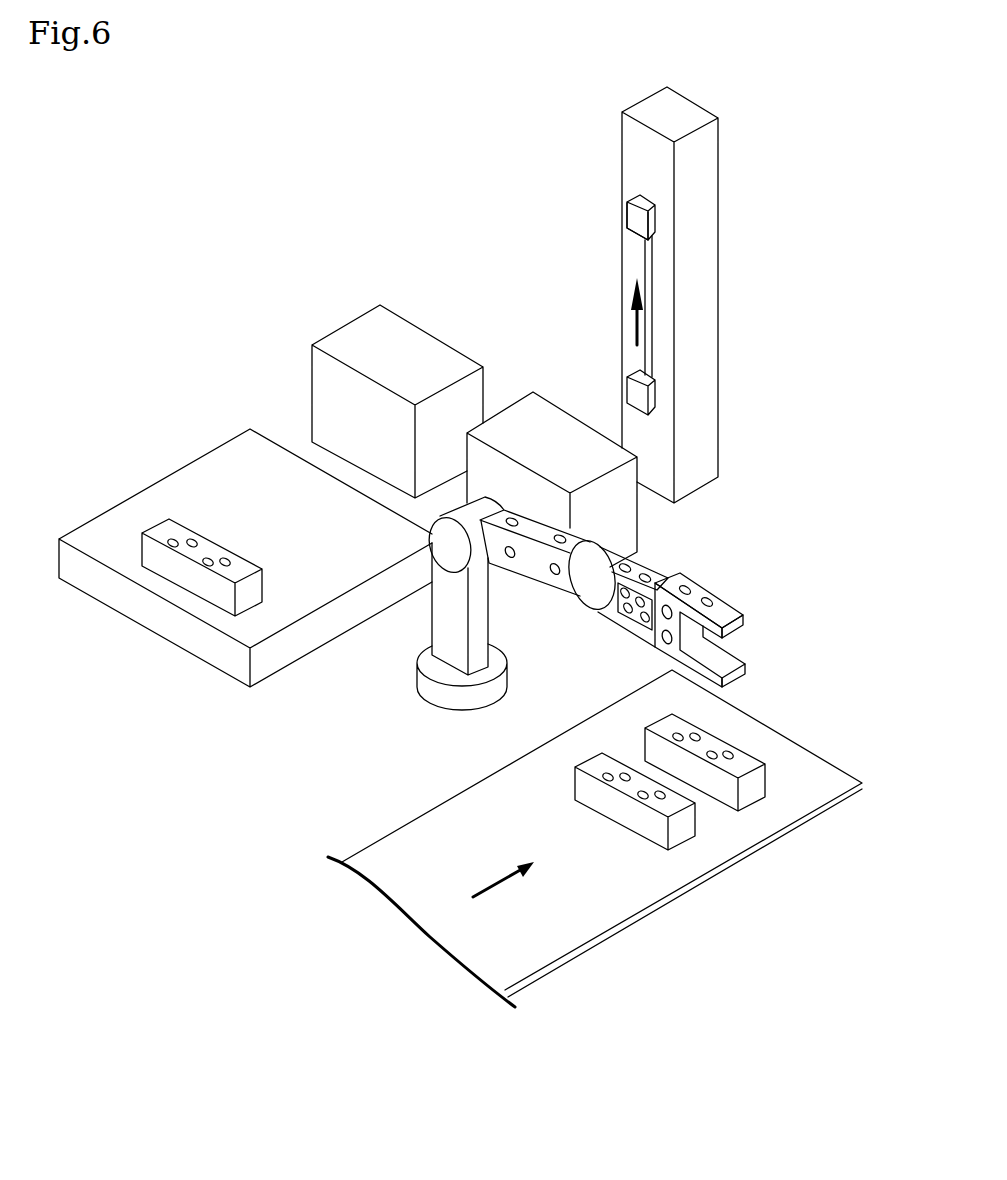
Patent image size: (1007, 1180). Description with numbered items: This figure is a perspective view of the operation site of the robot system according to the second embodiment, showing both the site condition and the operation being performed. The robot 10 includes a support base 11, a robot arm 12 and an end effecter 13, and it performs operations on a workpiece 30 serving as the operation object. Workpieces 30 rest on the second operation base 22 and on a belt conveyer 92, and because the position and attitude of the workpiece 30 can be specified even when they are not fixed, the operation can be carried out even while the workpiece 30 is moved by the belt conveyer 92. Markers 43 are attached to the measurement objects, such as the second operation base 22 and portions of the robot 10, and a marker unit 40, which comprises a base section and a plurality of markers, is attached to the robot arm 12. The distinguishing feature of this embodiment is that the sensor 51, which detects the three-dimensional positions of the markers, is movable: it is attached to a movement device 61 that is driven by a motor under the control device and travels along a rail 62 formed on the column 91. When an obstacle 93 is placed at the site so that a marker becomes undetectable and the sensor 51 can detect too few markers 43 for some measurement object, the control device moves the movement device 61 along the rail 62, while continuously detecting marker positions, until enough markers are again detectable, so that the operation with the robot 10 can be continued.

The robot 10 is at (582, 641).
The support base 11 is at (432, 693).
The robot arm 12 is at (567, 602).
The end effecter 13 is at (737, 590).
The second operation base 22 is at (155, 617).
The workpiece 30 is at (158, 520).
The marker unit 40 is at (620, 618).
The markers 43 is at (195, 528).
The sensor 51 is at (632, 217).
The movement device 61 is at (647, 193).
The rail 62 is at (652, 270).
The column 91 is at (702, 175).
The belt conveyer 92 is at (805, 763).
The obstacle 93 is at (515, 420).